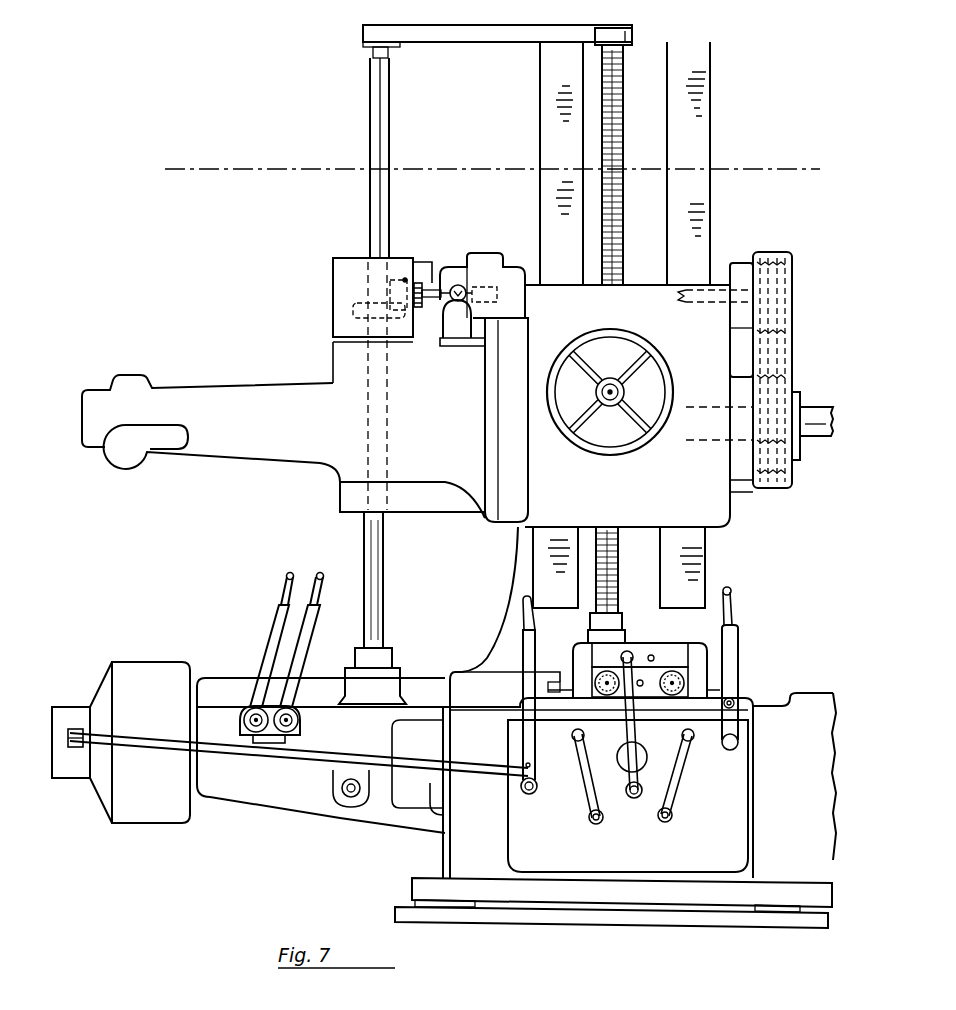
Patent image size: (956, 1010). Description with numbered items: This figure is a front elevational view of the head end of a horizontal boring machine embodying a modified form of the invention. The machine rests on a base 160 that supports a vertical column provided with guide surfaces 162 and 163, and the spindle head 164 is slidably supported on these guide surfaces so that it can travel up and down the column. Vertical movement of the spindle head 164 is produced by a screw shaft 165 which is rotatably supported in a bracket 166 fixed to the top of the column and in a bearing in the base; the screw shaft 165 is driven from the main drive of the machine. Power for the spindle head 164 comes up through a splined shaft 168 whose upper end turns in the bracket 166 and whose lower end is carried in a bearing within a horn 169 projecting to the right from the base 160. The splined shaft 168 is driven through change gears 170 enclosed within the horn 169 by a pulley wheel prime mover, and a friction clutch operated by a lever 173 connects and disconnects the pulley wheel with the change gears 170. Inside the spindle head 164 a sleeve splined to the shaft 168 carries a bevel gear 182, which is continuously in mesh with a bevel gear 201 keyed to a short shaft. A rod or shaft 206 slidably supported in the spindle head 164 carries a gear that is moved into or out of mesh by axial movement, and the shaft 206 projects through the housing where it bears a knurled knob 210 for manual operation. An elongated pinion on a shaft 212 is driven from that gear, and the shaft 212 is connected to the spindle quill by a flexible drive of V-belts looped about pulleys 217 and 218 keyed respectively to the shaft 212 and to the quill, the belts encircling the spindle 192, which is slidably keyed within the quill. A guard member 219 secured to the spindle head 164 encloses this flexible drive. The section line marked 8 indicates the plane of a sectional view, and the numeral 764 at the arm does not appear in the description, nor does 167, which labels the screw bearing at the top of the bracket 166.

The section line 8- 8 is at (177, 182).
The base 160 is at (460, 843).
The guide surface 162 is at (547, 117).
The guide surface 163 is at (707, 100).
The spindle head 164 is at (712, 505).
The screw shaft 165 is at (624, 125).
The bracket 166 is at (493, 34).
The screw bearing 167 is at (634, 47).
The splined shaft 168 is at (385, 103).
The horn 169 is at (215, 790).
The change gears 170 is at (233, 673).
The lever 173 is at (524, 646).
The bevel gear 182 is at (358, 307).
The spindle 192 is at (827, 398).
The bevel gear 201 is at (392, 290).
The rod or shaft 206 is at (431, 282).
The knurled knob 210 is at (419, 282).
The shaft 212 is at (693, 298).
The pulley 217 is at (785, 272).
The pulley 218 is at (777, 470).
The guard member 219 is at (799, 356).
The arm slide 764 is at (468, 498).